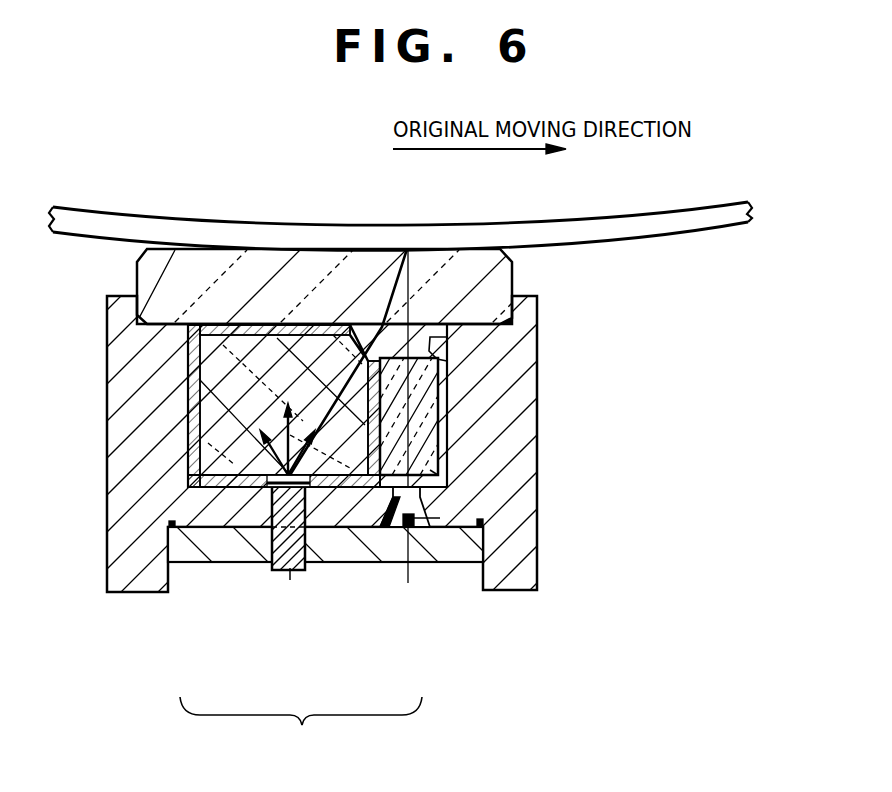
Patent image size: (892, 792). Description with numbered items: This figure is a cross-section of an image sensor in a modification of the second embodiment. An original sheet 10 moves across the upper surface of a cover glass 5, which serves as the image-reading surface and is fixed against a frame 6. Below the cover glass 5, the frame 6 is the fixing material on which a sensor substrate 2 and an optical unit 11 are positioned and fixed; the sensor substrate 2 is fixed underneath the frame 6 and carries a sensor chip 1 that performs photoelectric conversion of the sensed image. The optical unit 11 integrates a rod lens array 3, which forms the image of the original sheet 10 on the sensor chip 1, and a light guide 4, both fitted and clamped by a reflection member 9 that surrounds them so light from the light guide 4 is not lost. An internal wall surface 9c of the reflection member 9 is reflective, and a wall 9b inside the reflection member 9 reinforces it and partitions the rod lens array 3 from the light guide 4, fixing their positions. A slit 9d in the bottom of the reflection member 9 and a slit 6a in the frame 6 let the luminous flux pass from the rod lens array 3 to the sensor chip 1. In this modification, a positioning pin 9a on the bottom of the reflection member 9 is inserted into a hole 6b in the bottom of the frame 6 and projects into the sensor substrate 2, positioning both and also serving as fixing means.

The sensor chip 1 is at (440, 514).
The sensor substrate 2 is at (467, 547).
The rod lens array 3 is at (373, 452).
The light guide 4 is at (237, 452).
The cover glass 5 is at (487, 266).
The frame 6 is at (503, 392).
The slit 6a is at (400, 527).
The hole 6b is at (280, 487).
The reflection member 9 is at (252, 477).
The positioning pin 9a is at (297, 550).
The wall 9b is at (383, 452).
The internal wall surface 9c is at (210, 415).
The slit 9d is at (430, 470).
The original sheet 10 is at (545, 233).
The optical unit 11 is at (301, 728).